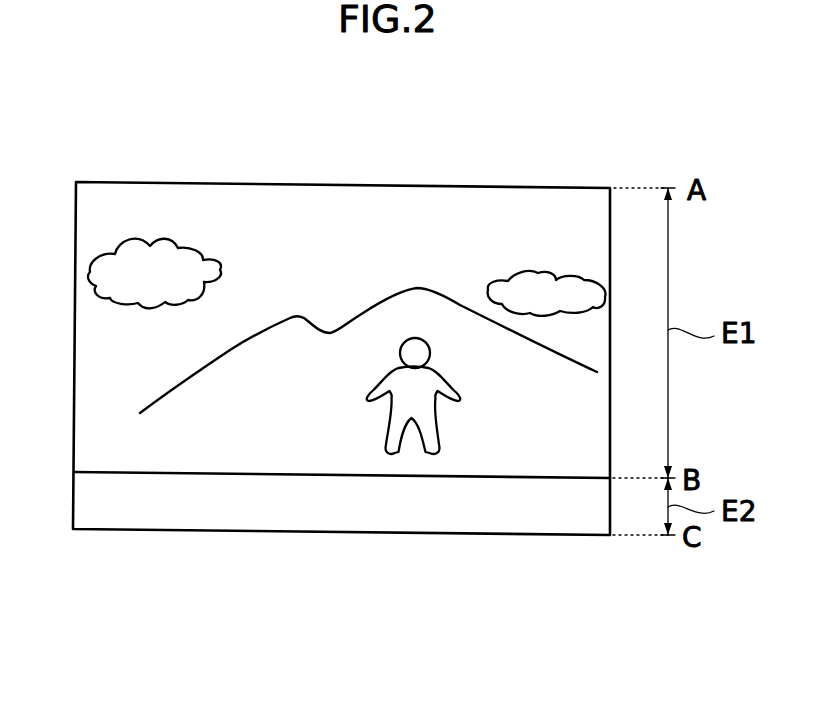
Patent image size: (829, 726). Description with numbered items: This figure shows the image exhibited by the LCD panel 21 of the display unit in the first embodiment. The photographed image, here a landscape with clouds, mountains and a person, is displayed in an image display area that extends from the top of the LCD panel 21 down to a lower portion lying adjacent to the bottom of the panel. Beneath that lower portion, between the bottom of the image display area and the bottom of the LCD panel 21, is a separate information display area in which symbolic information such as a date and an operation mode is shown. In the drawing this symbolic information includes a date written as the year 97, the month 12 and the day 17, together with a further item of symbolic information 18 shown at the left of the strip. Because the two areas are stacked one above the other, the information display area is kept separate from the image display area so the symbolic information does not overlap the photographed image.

The LCD panel 21 is at (346, 183).
The information display band 18 is at (108, 524).
The date display (year) 97 is at (471, 502).
The date display (month) 12 is at (533, 508).
The date display (day) 17 is at (583, 508).